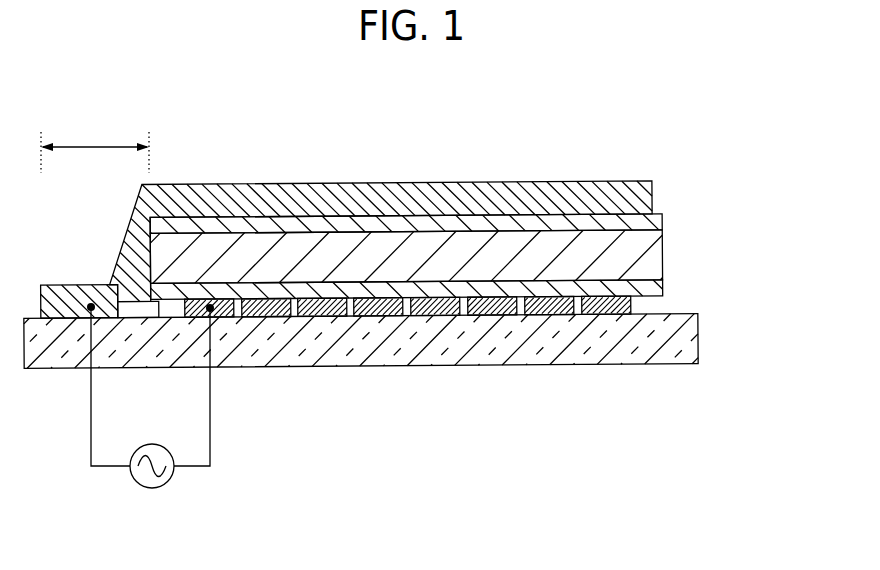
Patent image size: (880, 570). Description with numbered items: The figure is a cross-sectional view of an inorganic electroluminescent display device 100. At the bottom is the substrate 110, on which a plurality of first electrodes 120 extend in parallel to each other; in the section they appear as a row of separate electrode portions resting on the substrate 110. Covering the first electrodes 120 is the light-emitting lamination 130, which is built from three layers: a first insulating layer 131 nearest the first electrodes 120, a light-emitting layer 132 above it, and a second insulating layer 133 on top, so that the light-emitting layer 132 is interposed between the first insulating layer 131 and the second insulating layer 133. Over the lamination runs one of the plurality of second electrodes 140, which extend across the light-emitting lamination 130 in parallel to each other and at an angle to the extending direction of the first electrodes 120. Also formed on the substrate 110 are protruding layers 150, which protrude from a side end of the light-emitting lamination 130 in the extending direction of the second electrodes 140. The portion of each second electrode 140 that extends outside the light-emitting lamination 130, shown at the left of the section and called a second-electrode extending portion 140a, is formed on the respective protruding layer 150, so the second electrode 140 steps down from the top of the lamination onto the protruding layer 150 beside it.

The inorganic electroluminescent display device 100 is at (429, 270).
The substrate 110 is at (698, 333).
The first electrodes 120 is at (633, 302).
The light-emitting lamination 130 is at (492, 243).
The first insulating layer 131 is at (665, 288).
The light-emitting layer 132 is at (665, 252).
The second insulating layer 133 is at (665, 222).
The second electrodes 140 is at (655, 195).
The second-electrode extending portions 140a is at (95, 143).
The protruding layers 150 is at (130, 317).